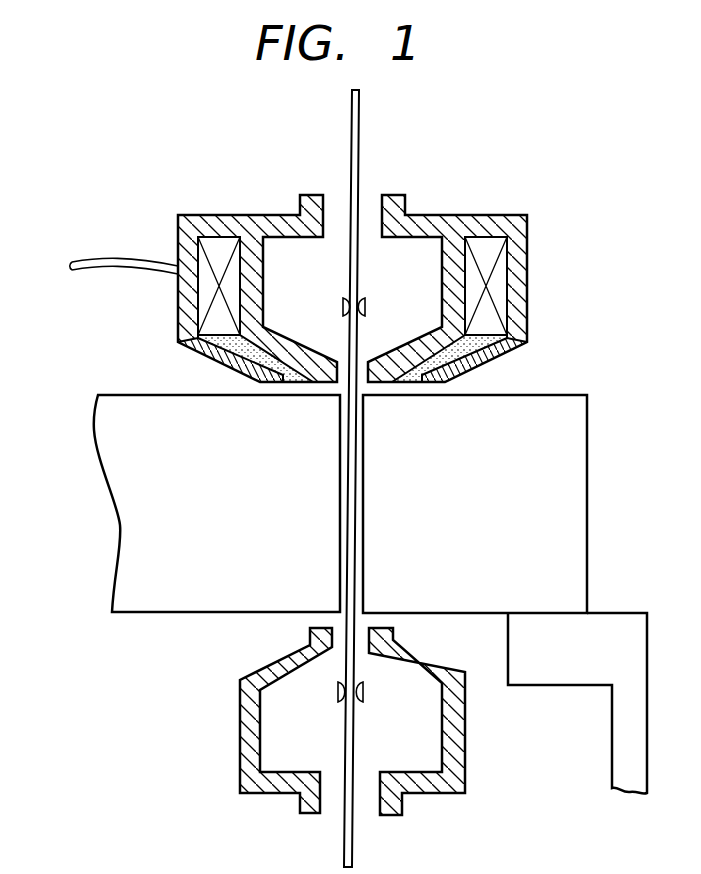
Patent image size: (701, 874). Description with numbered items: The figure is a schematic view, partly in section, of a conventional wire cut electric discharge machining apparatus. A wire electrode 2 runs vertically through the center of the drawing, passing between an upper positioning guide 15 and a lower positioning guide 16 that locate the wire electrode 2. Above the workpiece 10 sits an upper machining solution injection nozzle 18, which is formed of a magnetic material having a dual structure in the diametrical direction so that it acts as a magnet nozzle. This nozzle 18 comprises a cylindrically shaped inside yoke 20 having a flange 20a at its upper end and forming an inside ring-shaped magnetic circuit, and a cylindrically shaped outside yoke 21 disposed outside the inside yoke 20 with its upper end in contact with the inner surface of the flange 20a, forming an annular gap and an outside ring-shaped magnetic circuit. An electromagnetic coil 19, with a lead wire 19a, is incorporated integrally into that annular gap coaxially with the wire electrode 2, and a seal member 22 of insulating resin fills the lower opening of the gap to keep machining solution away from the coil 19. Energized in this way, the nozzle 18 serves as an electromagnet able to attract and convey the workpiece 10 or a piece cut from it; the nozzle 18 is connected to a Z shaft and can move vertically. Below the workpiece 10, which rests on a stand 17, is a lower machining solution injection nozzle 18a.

The wire electrode 2 is at (360, 142).
The workpiece 10 is at (588, 572).
The upper positioning guide 15 is at (367, 306).
The lower positioning guide 16 is at (337, 697).
The stand 17 is at (648, 770).
The upper machining solution injection nozzle 18 is at (245, 206).
The lower machining solution injection nozzle 18a is at (240, 763).
The electromagnetic coil 19 is at (495, 292).
The lead wire 19a is at (130, 272).
The inside yoke 20 is at (442, 262).
The flange 20a is at (495, 215).
The outside yoke 21 is at (529, 326).
The non-magnetic spacer 22 is at (413, 385).